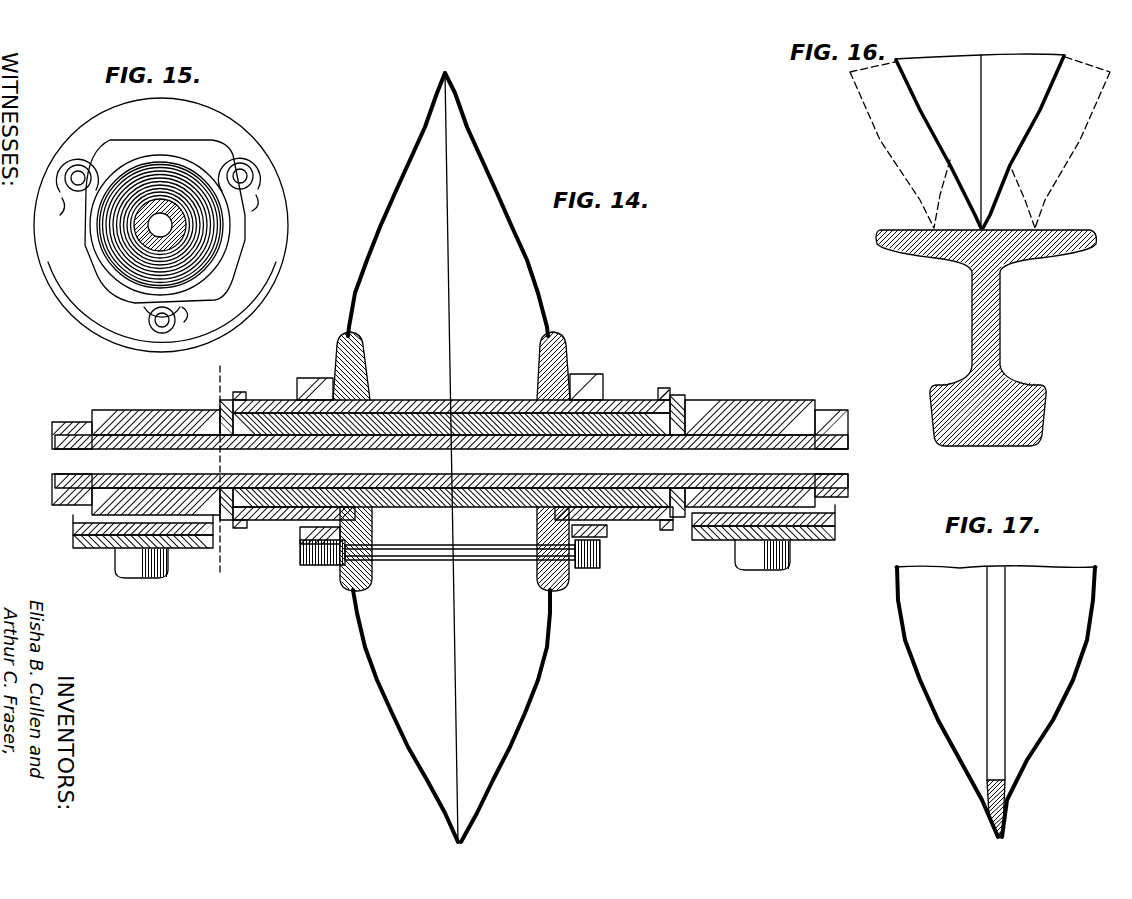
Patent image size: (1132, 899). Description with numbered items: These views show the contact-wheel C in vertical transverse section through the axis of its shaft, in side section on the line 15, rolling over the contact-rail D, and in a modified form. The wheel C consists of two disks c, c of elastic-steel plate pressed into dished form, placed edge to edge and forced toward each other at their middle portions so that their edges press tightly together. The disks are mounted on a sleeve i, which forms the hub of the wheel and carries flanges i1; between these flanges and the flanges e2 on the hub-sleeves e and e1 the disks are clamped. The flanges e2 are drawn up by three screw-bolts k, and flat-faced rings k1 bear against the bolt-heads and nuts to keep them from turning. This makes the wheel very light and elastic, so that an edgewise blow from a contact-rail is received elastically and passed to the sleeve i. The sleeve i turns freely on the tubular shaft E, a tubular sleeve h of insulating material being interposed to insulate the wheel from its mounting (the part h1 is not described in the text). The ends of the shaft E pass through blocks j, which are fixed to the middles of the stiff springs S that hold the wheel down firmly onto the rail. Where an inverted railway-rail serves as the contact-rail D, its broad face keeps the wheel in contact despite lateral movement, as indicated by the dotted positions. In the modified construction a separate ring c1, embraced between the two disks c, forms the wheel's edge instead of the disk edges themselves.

In FIG. 15, the shaft E is at (160, 225).
In FIG. 14, the shaft E is at (457, 457).
In FIG. 14, the contact-wheel C is at (449, 457).
In FIG. 16, the contact-wheel C is at (885, 128).
In FIG. 17, the contact-wheel C is at (996, 701).
In FIG. 14, the disks c is at (384, 716).
In FIG. 16, the disks c is at (945, 153).
In FIG. 17, the disks c is at (926, 695).
In FIG. 17, the ring c1 is at (984, 808).
In FIG. 16, the contact-rail D is at (985, 322).
In FIG. 14, the hub-sleeve e is at (276, 400).
In FIG. 15, the hub-sleeve e1 is at (213, 263).
In FIG. 14, the hub-sleeve e1 is at (640, 400).
In FIG. 15, the flanges e2 is at (281, 222).
In FIG. 14, the flanges e2 is at (335, 372).
In FIG. 15, the tubular sleeve h is at (200, 261).
In FIG. 14, the tubular sleeve h is at (226, 400).
In FIG. 15, the inner ring h1 is at (245, 237).
In FIG. 14, the inner ring h1 is at (451, 460).
In FIG. 14, the sleeve i is at (448, 410).
In FIG. 14, the flanges i1 is at (363, 368).
In FIG. 14, the blocks j is at (165, 410).
In FIG. 15, the screw-bolts k is at (238, 167).
In FIG. 14, the screw-bolts k is at (440, 562).
In FIG. 14, the rings k1 is at (300, 540).
In FIG. 14, the springs S is at (72, 538).
In FIG. 14, the section line 15 is at (215, 468).